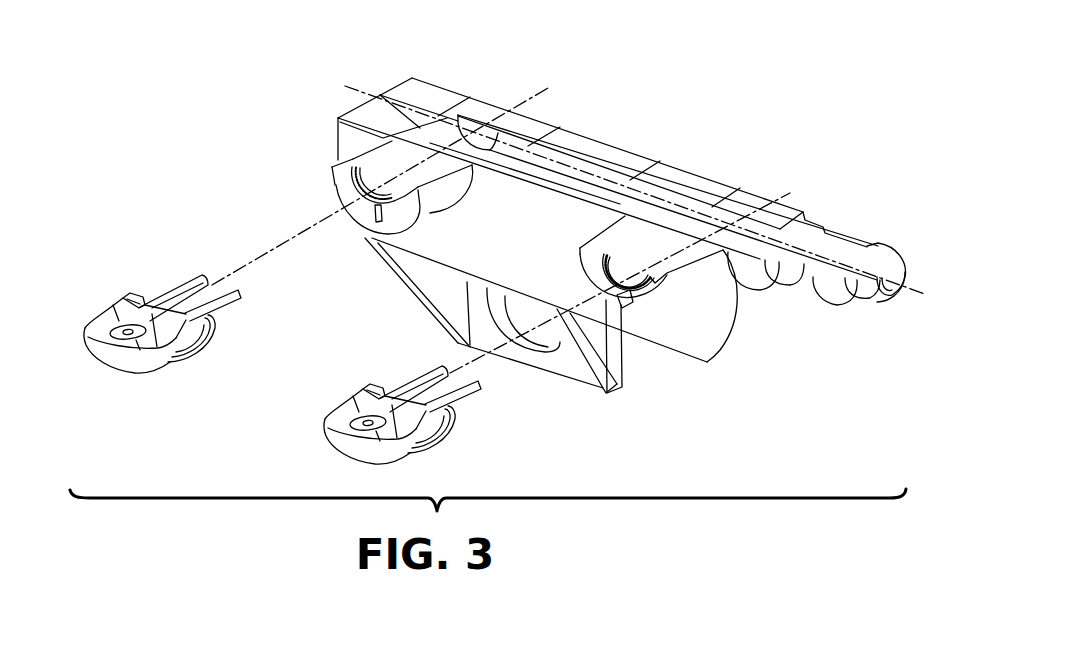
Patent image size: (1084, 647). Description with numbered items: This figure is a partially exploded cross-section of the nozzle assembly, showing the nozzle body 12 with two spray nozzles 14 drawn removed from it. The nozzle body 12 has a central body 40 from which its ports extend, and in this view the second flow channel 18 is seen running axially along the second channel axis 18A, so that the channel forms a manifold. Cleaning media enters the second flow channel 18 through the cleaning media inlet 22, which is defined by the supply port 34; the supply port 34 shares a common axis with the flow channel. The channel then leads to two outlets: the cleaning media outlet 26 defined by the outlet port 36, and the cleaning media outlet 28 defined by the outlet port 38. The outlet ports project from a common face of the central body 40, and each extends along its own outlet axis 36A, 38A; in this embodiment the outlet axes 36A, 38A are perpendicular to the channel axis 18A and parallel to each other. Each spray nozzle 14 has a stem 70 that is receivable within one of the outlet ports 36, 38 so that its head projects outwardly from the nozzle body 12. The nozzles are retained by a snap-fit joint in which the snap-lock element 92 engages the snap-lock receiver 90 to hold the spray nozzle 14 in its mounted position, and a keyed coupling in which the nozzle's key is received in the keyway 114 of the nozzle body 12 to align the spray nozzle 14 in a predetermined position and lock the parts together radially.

The nozzle body 12 is at (382, 88).
The spray nozzle 14 is at (162, 370).
The second flow channel 18 is at (700, 207).
The second channel axis 18A is at (593, 173).
The cleaning media inlet 22 is at (888, 289).
The cleaning media outlet 26 is at (609, 290).
The cleaning media outlet 28 is at (380, 178).
The supply port 34 is at (877, 250).
The outlet port 36 is at (723, 250).
The outlet axis 36A is at (697, 277).
The outlet port 38 is at (438, 202).
The outlet axis 38A is at (422, 168).
The central body 40 is at (563, 128).
The stem 70 is at (241, 293).
The snap-lock receiver 90 is at (358, 167).
The snap-lock element 92 is at (158, 292).
The keyway 114 is at (376, 216).